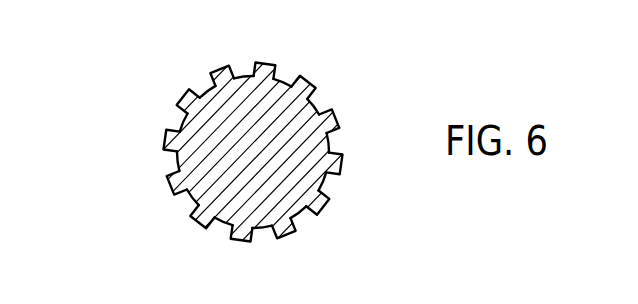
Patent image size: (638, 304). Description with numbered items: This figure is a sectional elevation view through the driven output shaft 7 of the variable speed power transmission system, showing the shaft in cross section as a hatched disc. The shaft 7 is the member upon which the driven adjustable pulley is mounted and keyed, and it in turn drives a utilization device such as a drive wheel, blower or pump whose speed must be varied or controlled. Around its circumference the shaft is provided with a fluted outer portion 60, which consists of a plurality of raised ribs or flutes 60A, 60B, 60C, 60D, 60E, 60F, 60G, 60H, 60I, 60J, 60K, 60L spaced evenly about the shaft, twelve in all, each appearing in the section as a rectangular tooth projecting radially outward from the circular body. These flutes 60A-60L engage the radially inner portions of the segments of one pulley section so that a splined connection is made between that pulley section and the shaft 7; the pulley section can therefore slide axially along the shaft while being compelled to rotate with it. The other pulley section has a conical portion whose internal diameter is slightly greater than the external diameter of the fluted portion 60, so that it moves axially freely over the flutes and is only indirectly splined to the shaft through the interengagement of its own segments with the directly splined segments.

The fluted outer portion 60 is at (166, 42).
The driven output shaft 7 is at (238, 158).
The flute 60A is at (268, 63).
The flute 60B is at (303, 85).
The flute 60C is at (335, 115).
The flute 60D is at (343, 163).
The flute 60E is at (320, 207).
The flute 60F is at (290, 233).
The flute 60G is at (242, 241).
The flute 60H is at (193, 225).
The flute 60I is at (170, 187).
The flute 60J is at (167, 137).
The flute 60K is at (186, 98).
The flute 60L is at (219, 66).